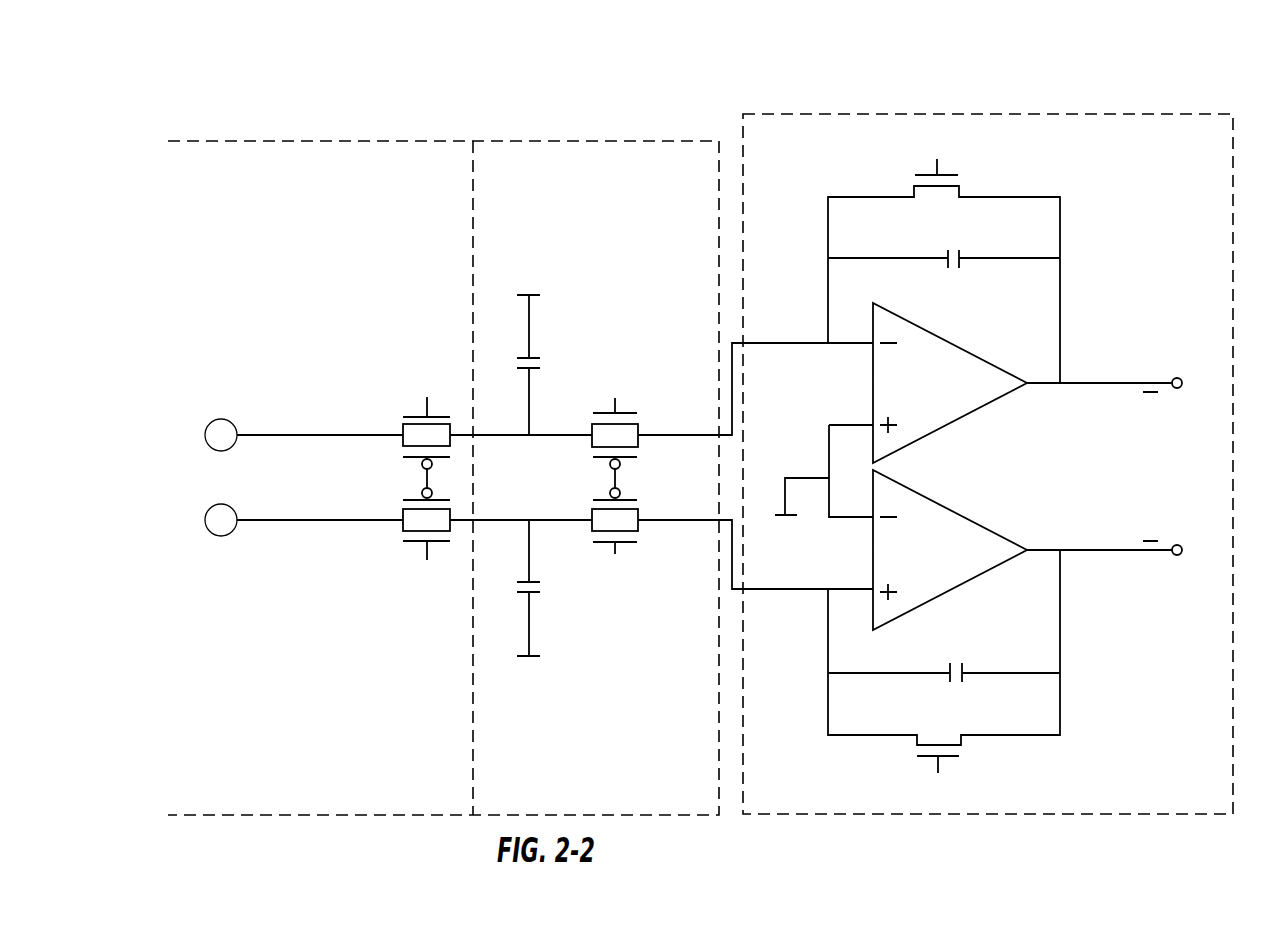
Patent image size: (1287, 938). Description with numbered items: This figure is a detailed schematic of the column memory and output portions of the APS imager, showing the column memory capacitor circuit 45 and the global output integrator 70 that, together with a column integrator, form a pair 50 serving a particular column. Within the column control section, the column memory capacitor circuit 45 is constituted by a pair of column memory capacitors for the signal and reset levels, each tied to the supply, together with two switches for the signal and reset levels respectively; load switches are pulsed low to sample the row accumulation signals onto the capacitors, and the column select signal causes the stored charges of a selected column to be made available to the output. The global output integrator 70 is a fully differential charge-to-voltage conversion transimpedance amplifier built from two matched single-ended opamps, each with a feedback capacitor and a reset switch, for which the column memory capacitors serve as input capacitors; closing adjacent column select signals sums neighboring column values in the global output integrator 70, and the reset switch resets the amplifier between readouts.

The column integrator and column memory capacitor circuit pair 50 is at (572, 88).
The column memory capacitor circuit 45 is at (672, 165).
The global output integrator 70 is at (1136, 162).